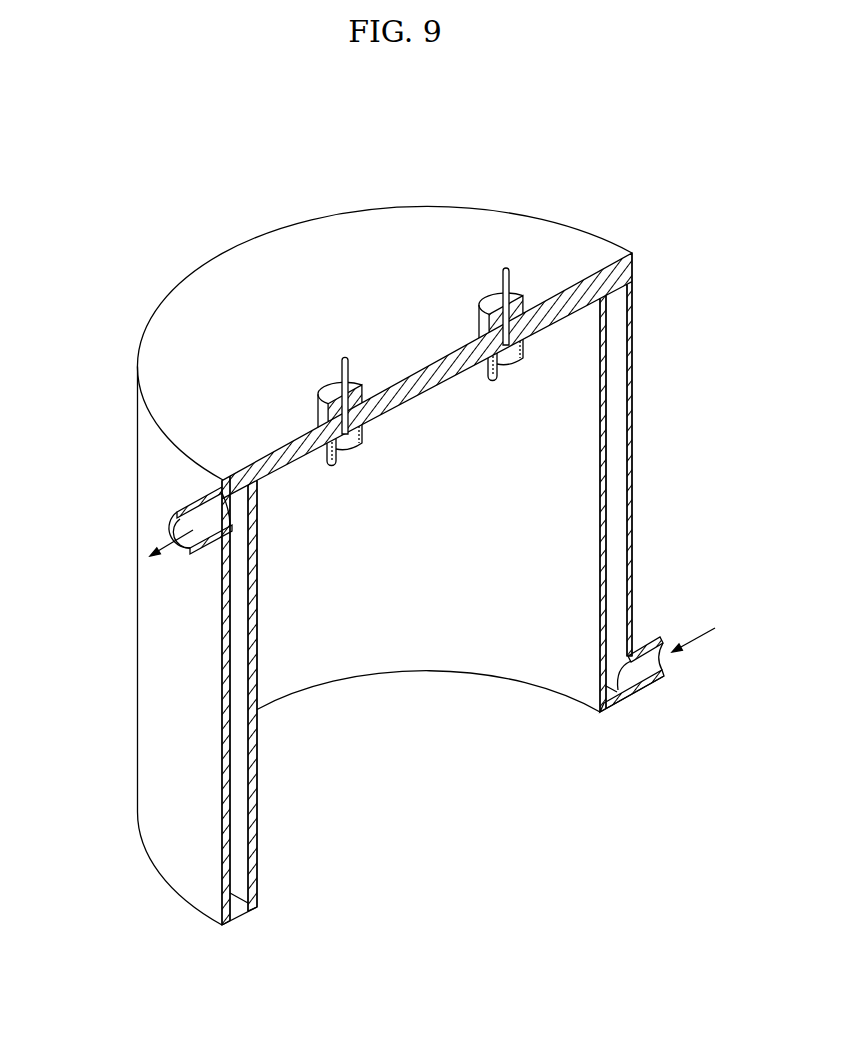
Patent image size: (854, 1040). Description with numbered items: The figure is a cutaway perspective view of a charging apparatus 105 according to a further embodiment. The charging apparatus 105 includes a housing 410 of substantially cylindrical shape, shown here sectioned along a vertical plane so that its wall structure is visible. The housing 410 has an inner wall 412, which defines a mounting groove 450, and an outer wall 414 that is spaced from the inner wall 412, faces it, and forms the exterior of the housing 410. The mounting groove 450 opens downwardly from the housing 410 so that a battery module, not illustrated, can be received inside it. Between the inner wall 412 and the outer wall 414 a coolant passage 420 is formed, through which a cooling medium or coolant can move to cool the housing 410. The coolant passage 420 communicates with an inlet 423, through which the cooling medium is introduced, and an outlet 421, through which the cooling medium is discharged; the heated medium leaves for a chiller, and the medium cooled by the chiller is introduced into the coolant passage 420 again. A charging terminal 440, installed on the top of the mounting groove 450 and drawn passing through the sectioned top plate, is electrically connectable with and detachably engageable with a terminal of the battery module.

The charging apparatus 105 is at (384, 133).
The housing 410 is at (643, 344).
The inner wall 412 is at (602, 459).
The outer wall 414 is at (633, 400).
The coolant passage 420 is at (616, 514).
The outlet 421 is at (190, 505).
The inlet 423 is at (650, 636).
The charging terminal 440 is at (514, 300).
The mounting groove 450 is at (478, 632).